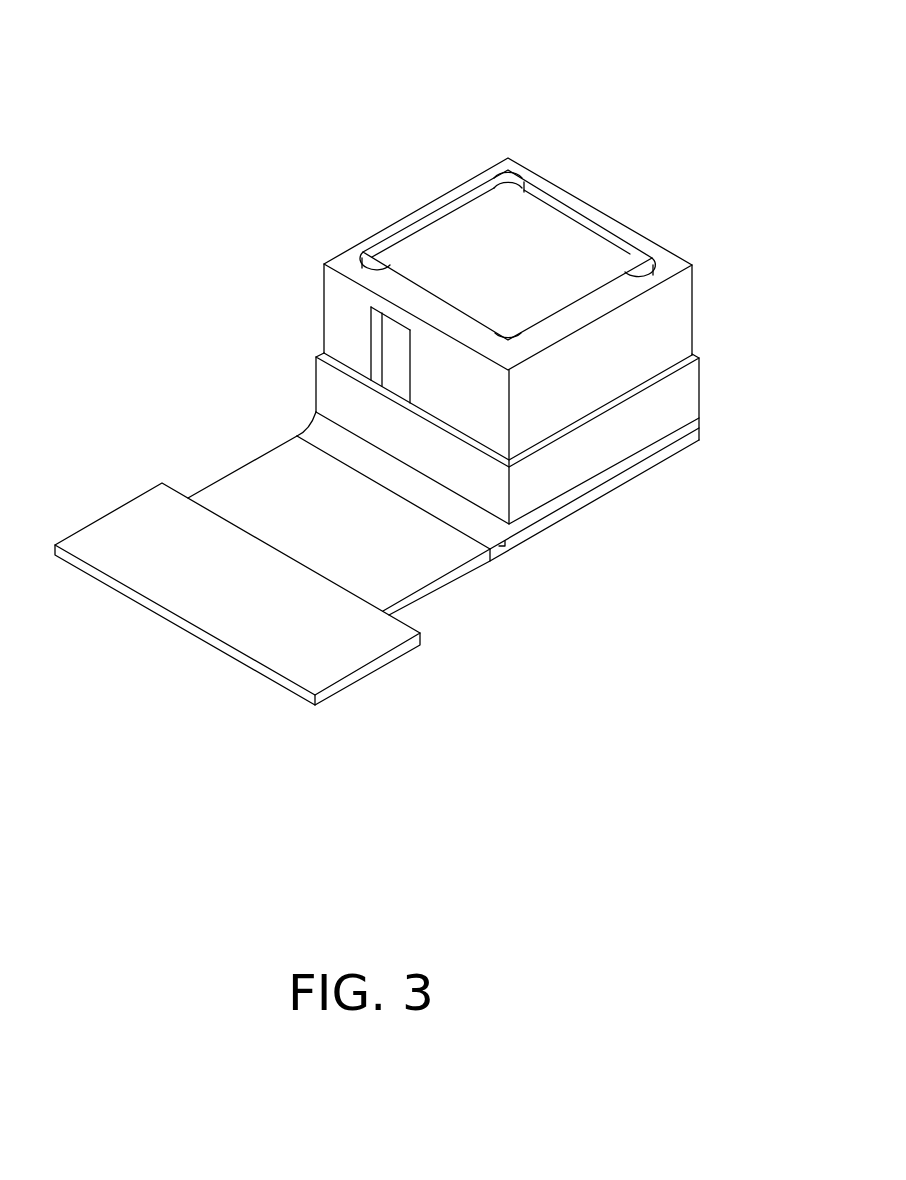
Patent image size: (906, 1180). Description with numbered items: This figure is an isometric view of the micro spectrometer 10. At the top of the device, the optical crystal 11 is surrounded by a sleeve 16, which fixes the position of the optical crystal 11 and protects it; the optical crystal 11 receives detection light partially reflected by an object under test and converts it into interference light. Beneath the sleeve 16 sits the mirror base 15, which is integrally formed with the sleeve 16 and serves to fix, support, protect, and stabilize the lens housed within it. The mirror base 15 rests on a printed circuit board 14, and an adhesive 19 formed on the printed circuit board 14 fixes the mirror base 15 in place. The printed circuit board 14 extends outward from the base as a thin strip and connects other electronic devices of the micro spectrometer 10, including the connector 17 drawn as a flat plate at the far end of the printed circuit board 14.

The micro spectrometer 10 is at (417, 46).
The optical crystal 11 is at (552, 235).
The printed circuit board 14 is at (437, 565).
The mirror base 15 is at (685, 397).
The sleeve 16 is at (675, 313).
The connector 17 is at (338, 658).
The adhesive 19 is at (491, 526).